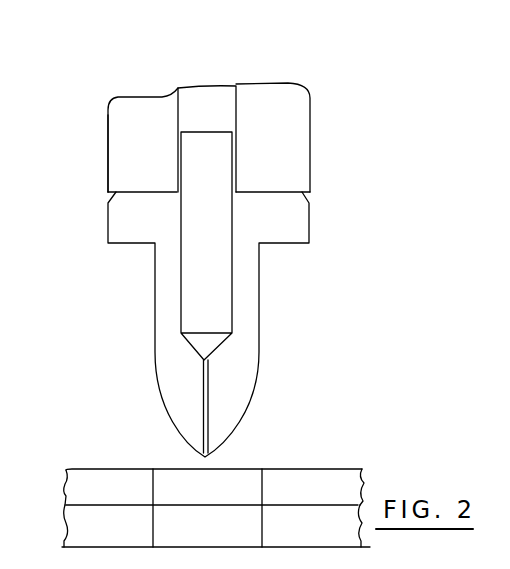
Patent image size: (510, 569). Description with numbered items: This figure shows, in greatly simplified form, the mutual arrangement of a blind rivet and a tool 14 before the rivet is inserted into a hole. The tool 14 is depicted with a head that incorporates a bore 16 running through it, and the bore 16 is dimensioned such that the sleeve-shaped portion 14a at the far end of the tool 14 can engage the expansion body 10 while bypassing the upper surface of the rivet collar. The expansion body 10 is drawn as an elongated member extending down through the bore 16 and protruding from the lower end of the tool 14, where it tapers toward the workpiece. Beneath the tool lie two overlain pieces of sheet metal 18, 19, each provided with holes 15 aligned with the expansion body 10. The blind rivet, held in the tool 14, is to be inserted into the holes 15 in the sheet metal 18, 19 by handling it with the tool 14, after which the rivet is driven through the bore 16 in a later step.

The expansion body 10 is at (203, 273).
The tool 14 is at (315, 166).
The sleeve-shaped portion 14a is at (118, 172).
The hole 15 is at (242, 476).
The bore 16 is at (215, 103).
The piece of sheet metal 18 is at (80, 488).
The piece of sheet metal 19 is at (80, 525).